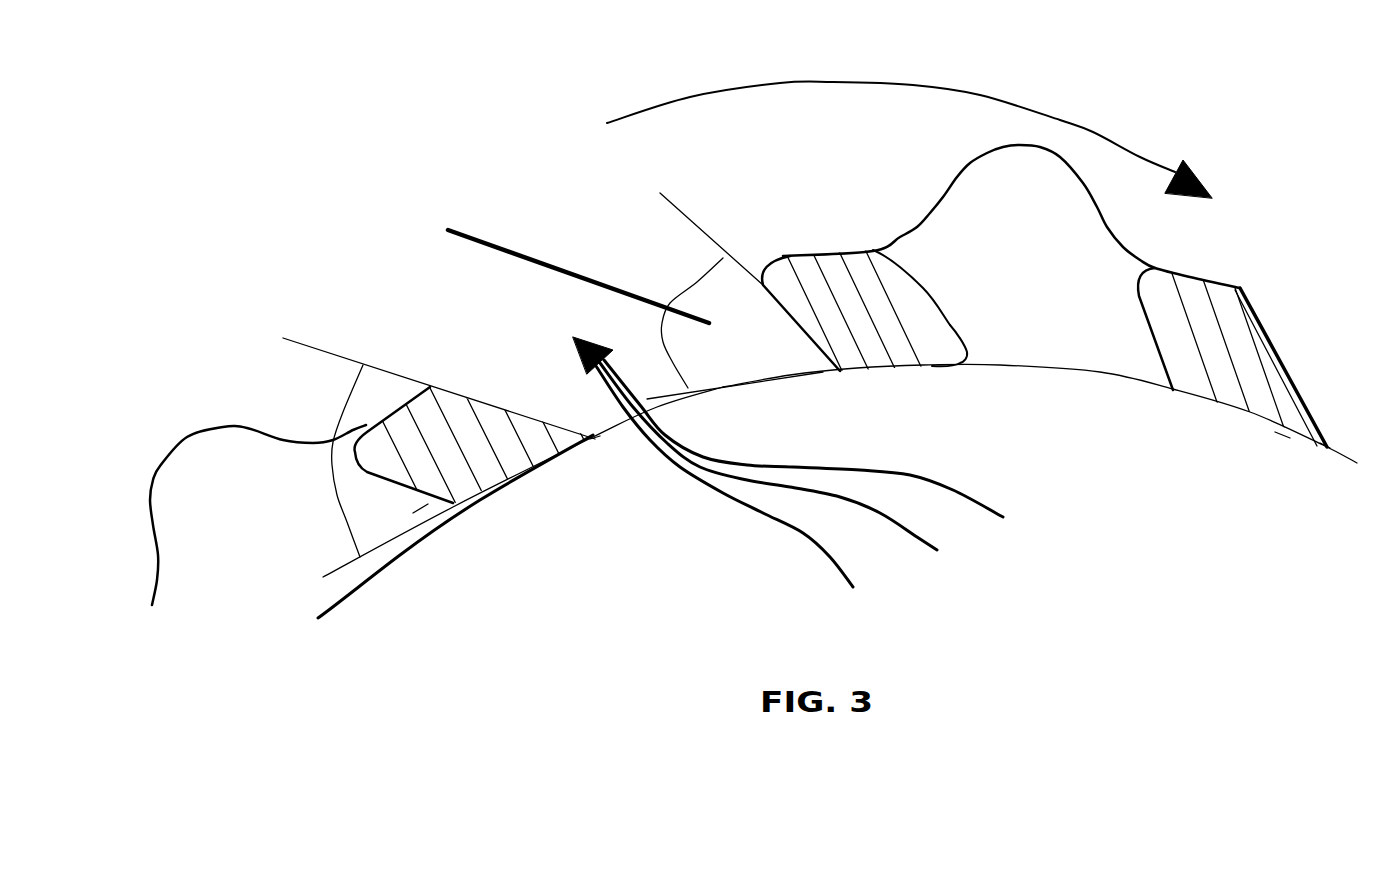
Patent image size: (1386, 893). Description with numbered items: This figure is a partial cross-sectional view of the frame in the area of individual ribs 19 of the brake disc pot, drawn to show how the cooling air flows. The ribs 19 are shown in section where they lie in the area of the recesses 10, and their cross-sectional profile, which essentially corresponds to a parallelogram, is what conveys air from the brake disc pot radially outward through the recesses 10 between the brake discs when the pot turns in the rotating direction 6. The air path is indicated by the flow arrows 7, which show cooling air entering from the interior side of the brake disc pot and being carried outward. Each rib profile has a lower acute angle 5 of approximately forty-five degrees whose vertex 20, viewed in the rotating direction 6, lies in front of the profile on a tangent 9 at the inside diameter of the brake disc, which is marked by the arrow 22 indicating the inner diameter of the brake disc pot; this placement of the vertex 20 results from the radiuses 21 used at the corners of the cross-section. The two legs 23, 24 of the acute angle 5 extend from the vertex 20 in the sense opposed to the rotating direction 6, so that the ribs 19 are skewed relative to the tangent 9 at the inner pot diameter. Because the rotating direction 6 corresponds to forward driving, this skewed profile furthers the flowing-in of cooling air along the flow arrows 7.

The acute angle 5 is at (393, 392).
The rotating direction 6 is at (1093, 132).
The flow arrows 7 is at (992, 515).
The tangent 9 is at (340, 566).
The recesses 10 is at (1057, 330).
The ribs 19 is at (487, 463).
The vertex 20 is at (600, 438).
The radiuses 21 is at (973, 353).
The arrow 22 is at (423, 546).
The leg 23 is at (300, 347).
The leg 24 is at (420, 510).